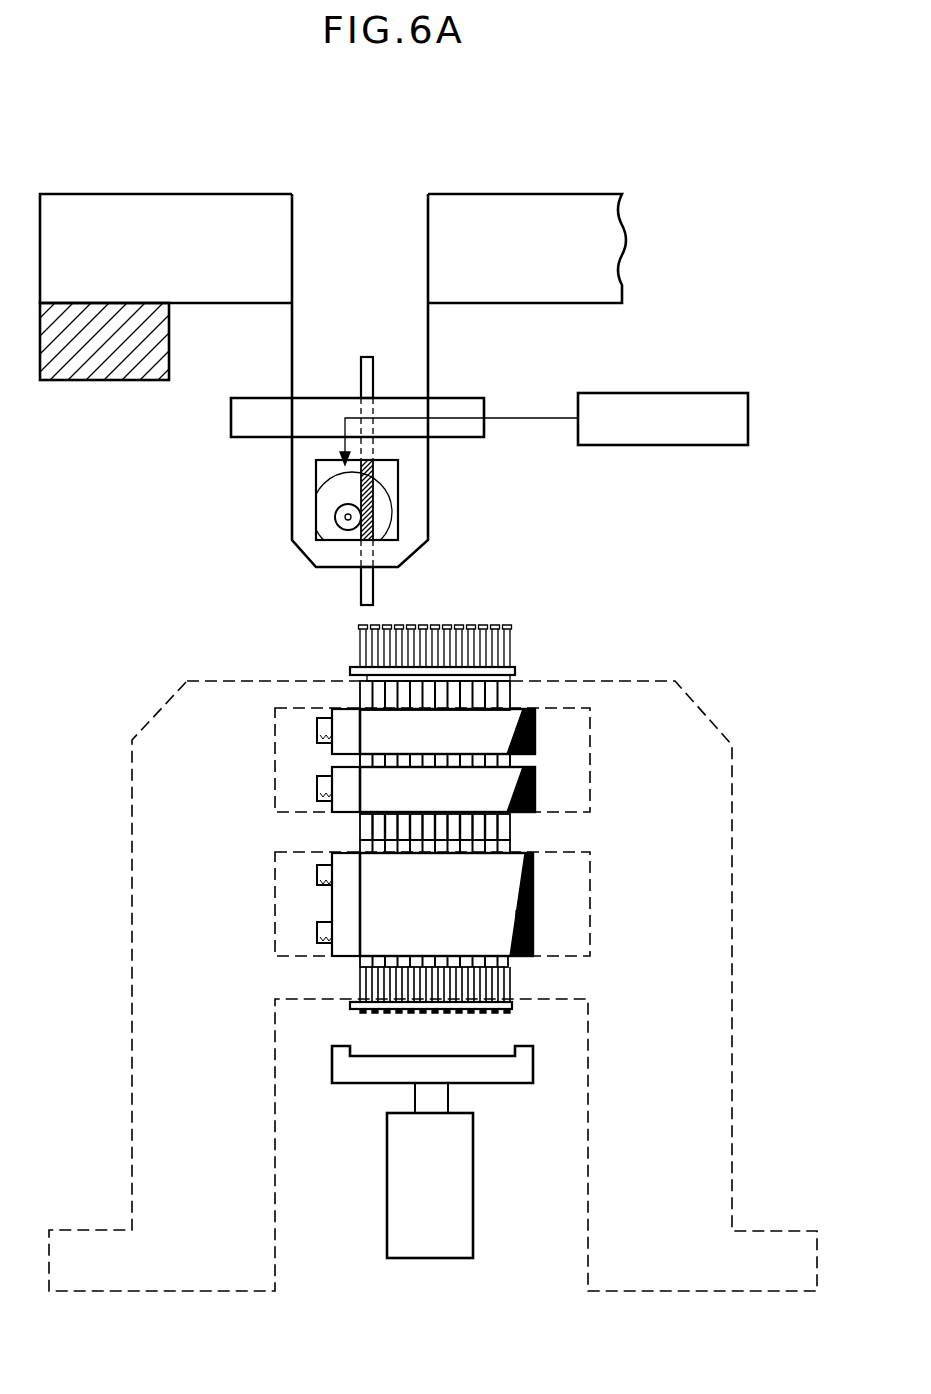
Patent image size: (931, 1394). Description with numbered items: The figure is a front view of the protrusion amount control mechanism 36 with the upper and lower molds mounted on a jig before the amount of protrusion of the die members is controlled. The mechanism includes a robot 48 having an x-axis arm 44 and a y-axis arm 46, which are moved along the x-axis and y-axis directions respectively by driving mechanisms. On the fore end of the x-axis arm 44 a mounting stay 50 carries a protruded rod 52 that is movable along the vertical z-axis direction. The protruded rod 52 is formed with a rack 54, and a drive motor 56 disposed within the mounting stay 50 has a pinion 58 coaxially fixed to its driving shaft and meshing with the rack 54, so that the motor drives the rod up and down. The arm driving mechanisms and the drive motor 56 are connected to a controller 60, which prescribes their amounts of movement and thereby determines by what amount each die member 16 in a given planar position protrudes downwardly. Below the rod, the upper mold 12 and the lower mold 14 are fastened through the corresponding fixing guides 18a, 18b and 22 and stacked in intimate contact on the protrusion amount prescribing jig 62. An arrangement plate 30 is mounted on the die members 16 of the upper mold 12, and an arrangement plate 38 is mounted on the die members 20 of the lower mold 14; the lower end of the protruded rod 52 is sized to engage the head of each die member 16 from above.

The upper mold 12 is at (517, 628).
The lower mold 14 is at (380, 1022).
The die member 16 is at (373, 695).
The fixing guide 18a is at (535, 737).
The fixing guide 18b is at (535, 785).
The die member 20 is at (357, 962).
The fixing guide 22 is at (533, 898).
The arrangement plate 30 is at (515, 667).
The protrusion amount control mechanism 36 is at (491, 527).
The arrangement plate 38 is at (512, 1003).
The x-axis arm 44 is at (566, 212).
The y-axis arm 46 is at (102, 372).
The robot 48 is at (241, 186).
The mounting stay 50 is at (376, 215).
The protruded rod 52 is at (362, 362).
The rack 54 is at (375, 498).
The drive motor 56 is at (324, 498).
The pinion 58 is at (343, 527).
The controller 60 is at (690, 393).
The protrusion amount prescribing jig 62 is at (684, 698).